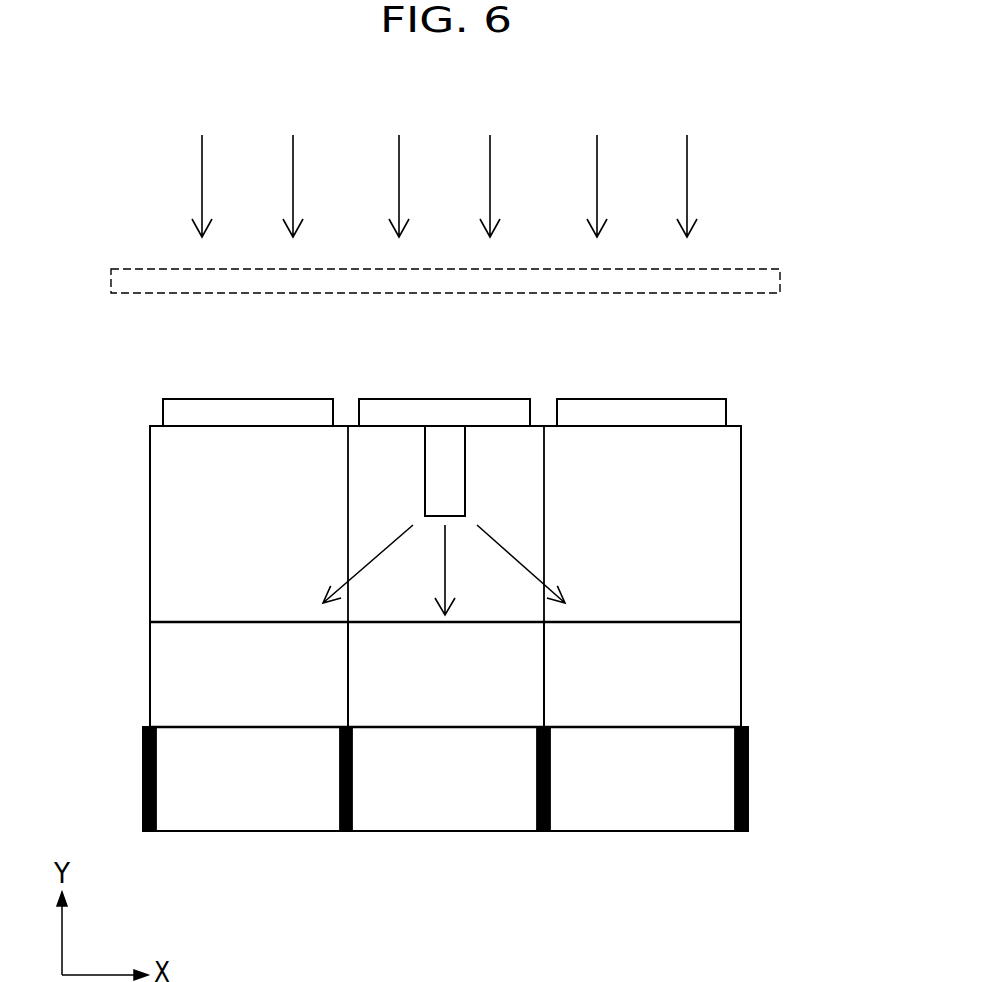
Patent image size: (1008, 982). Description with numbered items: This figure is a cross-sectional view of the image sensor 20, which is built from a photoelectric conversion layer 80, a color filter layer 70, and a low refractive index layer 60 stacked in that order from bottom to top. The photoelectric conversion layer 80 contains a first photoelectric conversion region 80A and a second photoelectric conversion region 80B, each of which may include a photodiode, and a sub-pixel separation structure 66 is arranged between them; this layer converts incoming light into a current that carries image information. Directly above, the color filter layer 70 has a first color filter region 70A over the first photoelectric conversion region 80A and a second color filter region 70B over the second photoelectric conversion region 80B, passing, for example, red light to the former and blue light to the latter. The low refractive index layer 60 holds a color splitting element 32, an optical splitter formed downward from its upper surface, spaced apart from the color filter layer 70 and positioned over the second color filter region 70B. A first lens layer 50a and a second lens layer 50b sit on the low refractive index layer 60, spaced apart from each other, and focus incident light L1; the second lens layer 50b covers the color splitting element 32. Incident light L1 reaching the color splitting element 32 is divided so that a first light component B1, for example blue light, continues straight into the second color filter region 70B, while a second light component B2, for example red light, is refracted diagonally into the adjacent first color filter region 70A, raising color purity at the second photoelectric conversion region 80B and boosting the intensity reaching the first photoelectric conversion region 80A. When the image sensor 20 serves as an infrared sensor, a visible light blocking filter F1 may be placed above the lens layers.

The image sensor 20 is at (783, 430).
The color splitting element 32 is at (458, 470).
The first lens layer 50a is at (248, 405).
The second lens layer 50b is at (445, 405).
The low refractive index layer 60 is at (140, 427).
The sub-pixel separation structure 66 is at (352, 782).
The color filter layer 70 is at (140, 627).
The first color filter region 70A is at (226, 690).
The second color filter region 70B is at (423, 690).
The photoelectric conversion layer 80 is at (140, 731).
The first photoelectric conversion region 80A is at (226, 794).
The second photoelectric conversion region 80B is at (423, 794).
The incident light L1 is at (687, 188).
The visible light blocking filter F1 is at (780, 282).
The first light component B1 is at (445, 570).
The second light component B2 is at (367, 562).